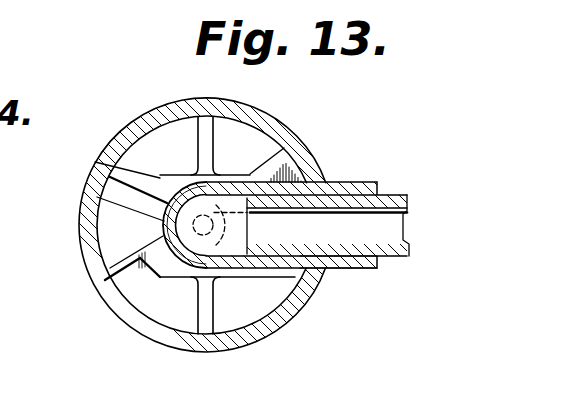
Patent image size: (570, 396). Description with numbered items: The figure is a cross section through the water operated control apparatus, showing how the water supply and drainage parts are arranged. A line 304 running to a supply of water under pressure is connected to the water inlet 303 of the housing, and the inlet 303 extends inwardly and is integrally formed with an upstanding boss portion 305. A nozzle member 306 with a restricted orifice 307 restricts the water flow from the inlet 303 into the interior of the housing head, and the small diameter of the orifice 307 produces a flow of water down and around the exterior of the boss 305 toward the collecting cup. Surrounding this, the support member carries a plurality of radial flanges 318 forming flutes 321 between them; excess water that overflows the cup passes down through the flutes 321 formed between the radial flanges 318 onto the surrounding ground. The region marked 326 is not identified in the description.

The water inlet 303 is at (364, 268).
The line 304 is at (392, 195).
The boss portion 305 is at (172, 194).
The nozzle member 306 is at (230, 211).
The restricted orifice 307 is at (172, 277).
The radial flanges 318 is at (198, 134).
The flutes 321 is at (124, 228).
The fillet 326 is at (287, 180).